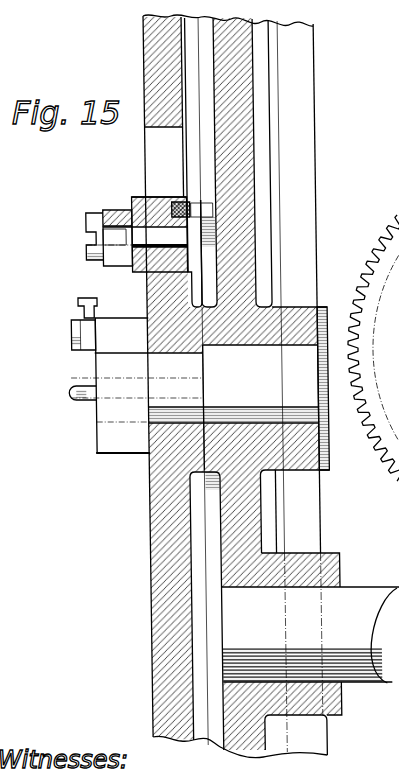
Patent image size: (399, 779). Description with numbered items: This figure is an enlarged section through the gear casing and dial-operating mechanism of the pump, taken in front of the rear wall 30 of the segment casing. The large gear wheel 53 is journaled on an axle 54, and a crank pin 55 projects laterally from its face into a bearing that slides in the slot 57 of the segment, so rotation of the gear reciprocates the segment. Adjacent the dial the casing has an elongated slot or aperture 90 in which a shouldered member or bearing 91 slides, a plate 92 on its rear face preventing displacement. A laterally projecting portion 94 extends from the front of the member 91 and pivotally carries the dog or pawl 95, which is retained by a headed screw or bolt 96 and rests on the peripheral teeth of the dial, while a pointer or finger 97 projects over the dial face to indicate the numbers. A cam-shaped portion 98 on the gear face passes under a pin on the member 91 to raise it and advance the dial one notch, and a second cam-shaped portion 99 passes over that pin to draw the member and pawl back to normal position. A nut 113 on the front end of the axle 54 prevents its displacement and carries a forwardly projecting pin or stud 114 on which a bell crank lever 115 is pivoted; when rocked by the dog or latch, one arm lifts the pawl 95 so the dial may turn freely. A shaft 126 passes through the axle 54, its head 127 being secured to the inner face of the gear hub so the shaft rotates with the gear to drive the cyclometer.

The rear wall 30 is at (318, 59).
The gear wheel 53 is at (242, 133).
The axle 54 is at (243, 447).
The crank pin 55 is at (310, 671).
The slot 57 is at (159, 520).
The elongated slot or aperture 90 is at (160, 150).
The shouldered member or bearing 91 is at (150, 197).
The plate 92 is at (186, 197).
The laterally projecting portion 94 is at (127, 243).
The dog or pawl 95 is at (122, 210).
The headed screw or bolt 96 is at (88, 222).
The pointer or finger 97 is at (216, 197).
The cam-shaped portion 98 is at (305, 167).
The cam-shaped portion 99 is at (206, 187).
The nut 113 is at (112, 407).
The pin or stud 114 is at (70, 340).
The bell crank lever 115 is at (97, 308).
The shaft 126 is at (83, 400).
The head 127 is at (328, 308).